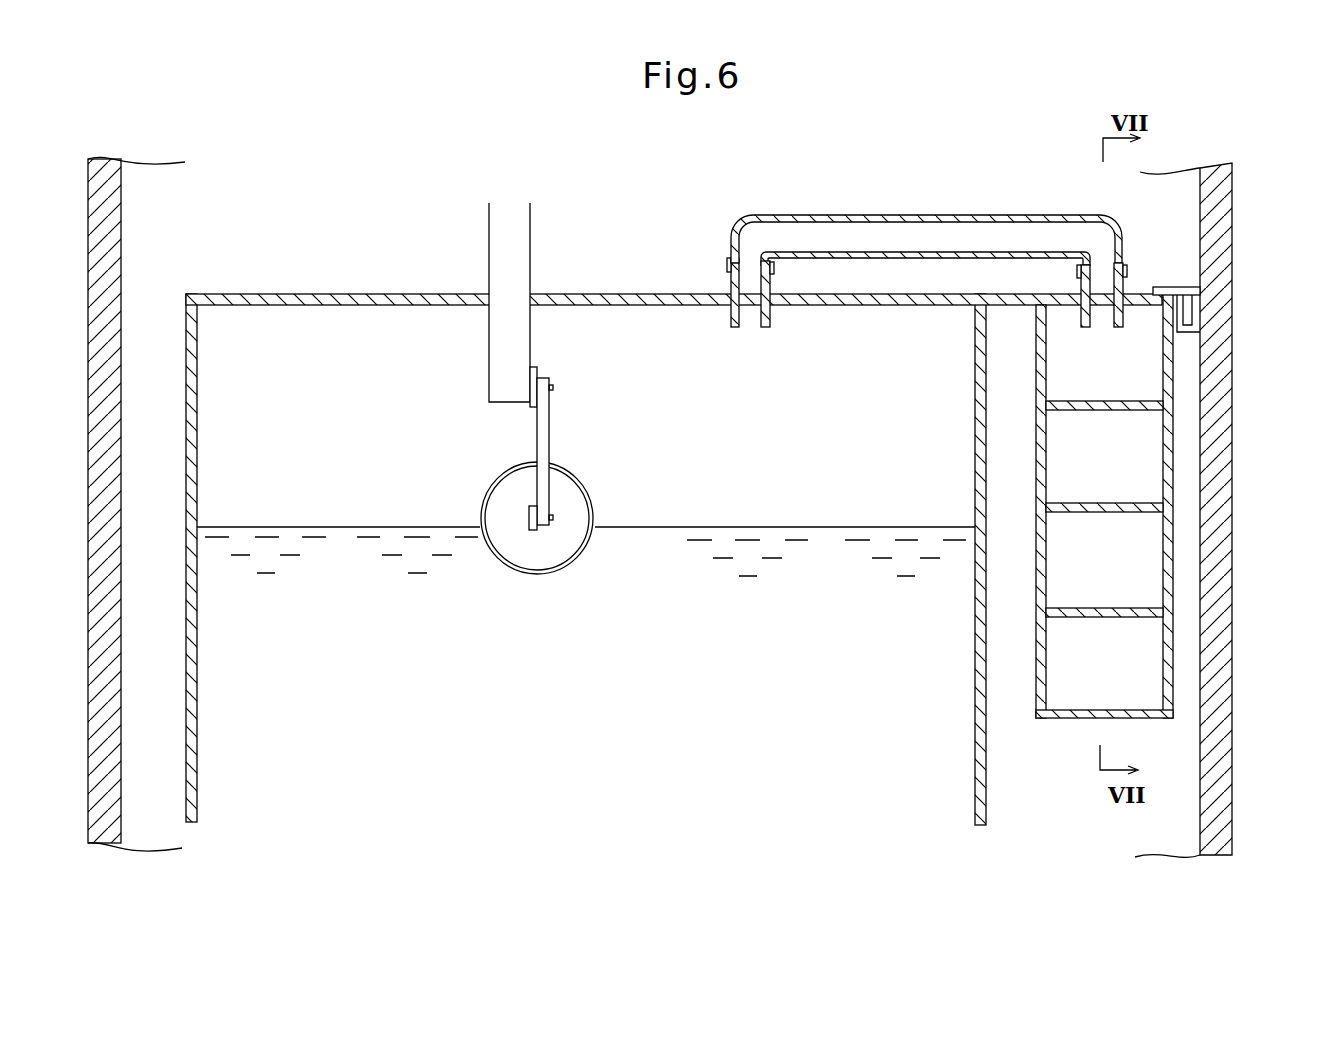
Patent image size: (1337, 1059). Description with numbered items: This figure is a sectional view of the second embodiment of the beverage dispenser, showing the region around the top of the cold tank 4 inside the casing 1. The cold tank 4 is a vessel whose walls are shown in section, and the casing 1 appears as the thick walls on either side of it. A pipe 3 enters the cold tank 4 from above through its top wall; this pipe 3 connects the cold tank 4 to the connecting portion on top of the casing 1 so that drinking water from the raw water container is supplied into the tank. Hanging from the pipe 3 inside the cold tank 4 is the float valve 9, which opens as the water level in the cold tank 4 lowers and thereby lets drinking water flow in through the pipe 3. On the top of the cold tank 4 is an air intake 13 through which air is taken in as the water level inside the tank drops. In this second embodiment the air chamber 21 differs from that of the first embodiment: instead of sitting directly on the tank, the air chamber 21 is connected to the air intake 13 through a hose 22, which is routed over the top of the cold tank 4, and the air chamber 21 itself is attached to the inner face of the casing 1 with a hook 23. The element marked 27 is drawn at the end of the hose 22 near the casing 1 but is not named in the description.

The casing 1 is at (1218, 222).
The pipe 3 is at (497, 238).
The cold tank 4 is at (192, 440).
The float valve 9 is at (502, 510).
The air intake 13 is at (732, 290).
The air chamber 21 is at (1172, 485).
The hose 22 is at (940, 215).
The hook 23 is at (1180, 287).
The pipe end 27 is at (1124, 285).